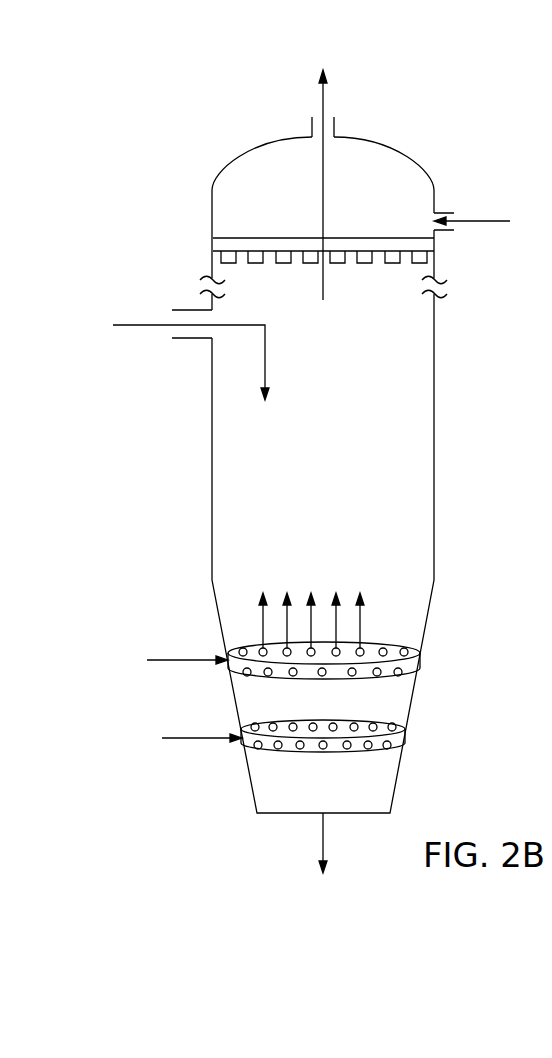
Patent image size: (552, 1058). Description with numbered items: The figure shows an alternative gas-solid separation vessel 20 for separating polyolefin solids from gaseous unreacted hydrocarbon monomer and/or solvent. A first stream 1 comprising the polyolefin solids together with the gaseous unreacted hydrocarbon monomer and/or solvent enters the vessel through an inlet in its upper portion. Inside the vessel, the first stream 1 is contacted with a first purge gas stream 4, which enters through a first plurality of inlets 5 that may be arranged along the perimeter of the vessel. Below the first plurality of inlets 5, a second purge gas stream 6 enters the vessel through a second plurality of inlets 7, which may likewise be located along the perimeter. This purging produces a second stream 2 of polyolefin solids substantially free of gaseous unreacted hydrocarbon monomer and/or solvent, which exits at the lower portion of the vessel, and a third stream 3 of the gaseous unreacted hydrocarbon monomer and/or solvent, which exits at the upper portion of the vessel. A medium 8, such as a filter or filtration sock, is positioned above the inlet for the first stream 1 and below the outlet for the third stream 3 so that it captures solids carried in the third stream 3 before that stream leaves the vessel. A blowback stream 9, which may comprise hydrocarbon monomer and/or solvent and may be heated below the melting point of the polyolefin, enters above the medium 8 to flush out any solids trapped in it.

The first stream 1 is at (146, 323).
The second stream 2 is at (320, 838).
The third stream 3 is at (323, 102).
The first purge gas stream 4 is at (172, 658).
The first plurality of inlets 5 is at (323, 676).
The second purge gas stream 6 is at (200, 742).
The second plurality of inlets 7 is at (387, 749).
The medium 8 is at (220, 243).
The blowback stream 9 is at (482, 221).
The gas-solid separation vessel 20 is at (307, 468).